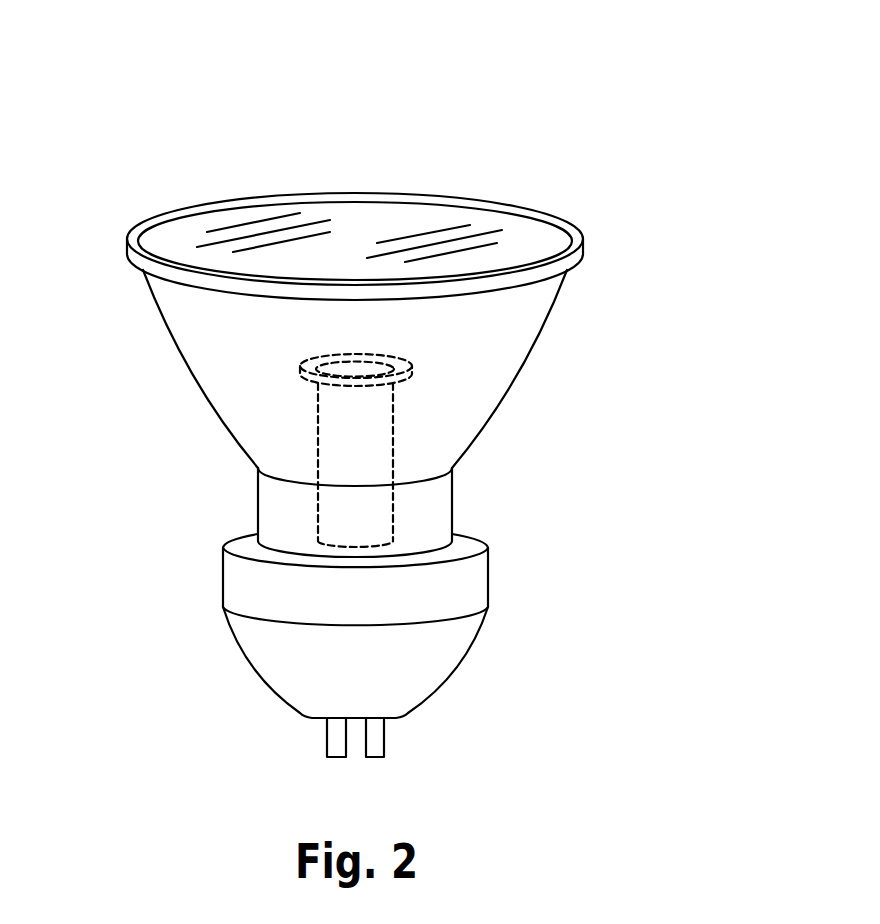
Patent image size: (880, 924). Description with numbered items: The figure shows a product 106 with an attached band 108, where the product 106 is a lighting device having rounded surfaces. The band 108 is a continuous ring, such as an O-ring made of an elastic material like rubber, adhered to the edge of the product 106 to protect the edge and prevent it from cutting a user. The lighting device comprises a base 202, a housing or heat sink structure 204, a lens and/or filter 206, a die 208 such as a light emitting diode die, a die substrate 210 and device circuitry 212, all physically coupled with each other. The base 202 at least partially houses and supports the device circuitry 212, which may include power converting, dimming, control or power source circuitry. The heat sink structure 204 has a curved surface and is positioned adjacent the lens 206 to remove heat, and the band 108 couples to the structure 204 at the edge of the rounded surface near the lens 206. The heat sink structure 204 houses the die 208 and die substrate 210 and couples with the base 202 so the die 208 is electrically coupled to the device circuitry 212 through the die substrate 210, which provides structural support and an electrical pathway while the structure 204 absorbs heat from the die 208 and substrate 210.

The product 106 is at (642, 57).
The band 108 is at (137, 232).
The base 202 is at (445, 643).
The heat sink structure 204 is at (535, 315).
The lens 206 is at (548, 236).
The die 208 is at (353, 365).
The die substrate 210 is at (300, 368).
The device circuitry 212 is at (393, 407).